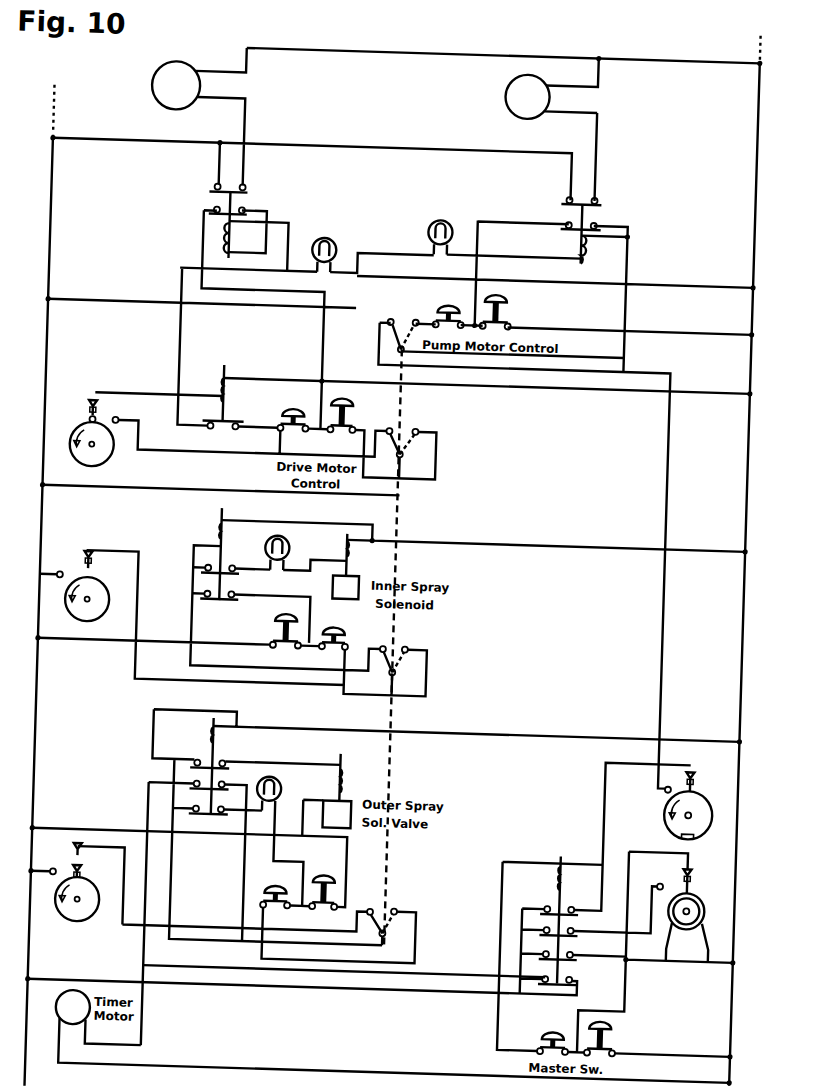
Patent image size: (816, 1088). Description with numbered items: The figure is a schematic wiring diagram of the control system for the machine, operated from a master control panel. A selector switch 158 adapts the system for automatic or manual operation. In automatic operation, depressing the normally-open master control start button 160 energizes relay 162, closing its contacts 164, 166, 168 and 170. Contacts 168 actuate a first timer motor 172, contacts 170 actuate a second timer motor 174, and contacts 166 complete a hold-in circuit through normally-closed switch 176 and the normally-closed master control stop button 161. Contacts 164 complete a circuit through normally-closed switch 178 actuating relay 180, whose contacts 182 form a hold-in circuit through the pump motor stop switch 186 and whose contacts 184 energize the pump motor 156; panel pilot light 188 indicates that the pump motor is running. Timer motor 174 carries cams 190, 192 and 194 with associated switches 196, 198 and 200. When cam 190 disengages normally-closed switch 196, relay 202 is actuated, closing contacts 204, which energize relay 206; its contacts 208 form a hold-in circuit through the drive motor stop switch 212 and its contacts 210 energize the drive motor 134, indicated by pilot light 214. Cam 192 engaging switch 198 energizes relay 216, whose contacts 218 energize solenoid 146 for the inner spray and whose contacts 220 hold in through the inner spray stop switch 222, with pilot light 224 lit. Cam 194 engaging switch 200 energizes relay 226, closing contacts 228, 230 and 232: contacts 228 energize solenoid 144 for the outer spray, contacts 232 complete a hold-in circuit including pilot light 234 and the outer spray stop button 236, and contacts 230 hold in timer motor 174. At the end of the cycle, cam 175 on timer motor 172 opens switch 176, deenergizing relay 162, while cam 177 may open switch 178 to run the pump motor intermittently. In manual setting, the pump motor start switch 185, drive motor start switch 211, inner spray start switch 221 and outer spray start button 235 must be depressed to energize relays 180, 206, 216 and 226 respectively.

The drive motor 134 is at (154, 77).
The pump motor 156 is at (508, 84).
The contacts 210 is at (219, 181).
The relay 206 is at (219, 204).
The contacts 208 is at (219, 210).
The panel pilot light 214 is at (339, 222).
The panel pilot light 188 is at (450, 201).
The contacts 184 is at (603, 182).
The contacts 182 is at (604, 207).
The relay 180 is at (592, 246).
The pump motor start switch 185 is at (448, 302).
The pump motor stop switch 186 is at (518, 296).
The selector switch 158 is at (408, 900).
The switch 196 is at (105, 393).
The cam 190 is at (101, 456).
The switch 198 is at (105, 548).
The cam 192 is at (103, 598).
The switch 200 is at (59, 844).
The cam 194 is at (101, 922).
The second timer motor 174 is at (89, 1008).
The relay 202 is at (239, 365).
The contacts 204 is at (221, 421).
The drive motor start switch 211 is at (300, 407).
The drive motor stop switch 212 is at (360, 403).
The relay 216 is at (241, 523).
The contacts 218 is at (258, 553).
The contacts 220 is at (252, 587).
The panel pilot light 224 is at (303, 537).
The solenoid 146 is at (366, 566).
The inner spray stop switch 222 is at (296, 626).
The inner spray start switch 221 is at (362, 639).
The relay 226 is at (240, 734).
The contacts 228 is at (248, 758).
The contacts 230 is at (248, 779).
The contacts 232 is at (248, 806).
The panel pilot light 234 is at (304, 780).
The solenoid 144 is at (356, 795).
The outer spray start button 235 is at (282, 888).
The outer spray stop button 236 is at (348, 888).
The relay 162 is at (588, 850).
The contacts 164 is at (600, 890).
The contacts 166 is at (601, 912).
The contacts 168 is at (601, 936).
The contacts 170 is at (601, 961).
The first timer motor 172 is at (731, 890).
The cam 175 is at (736, 918).
The switch 176 is at (716, 850).
The cam 177 is at (727, 778).
The switch 178 is at (716, 756).
The master control start button 160 is at (578, 1026).
The master control stop button 161 is at (636, 1026).